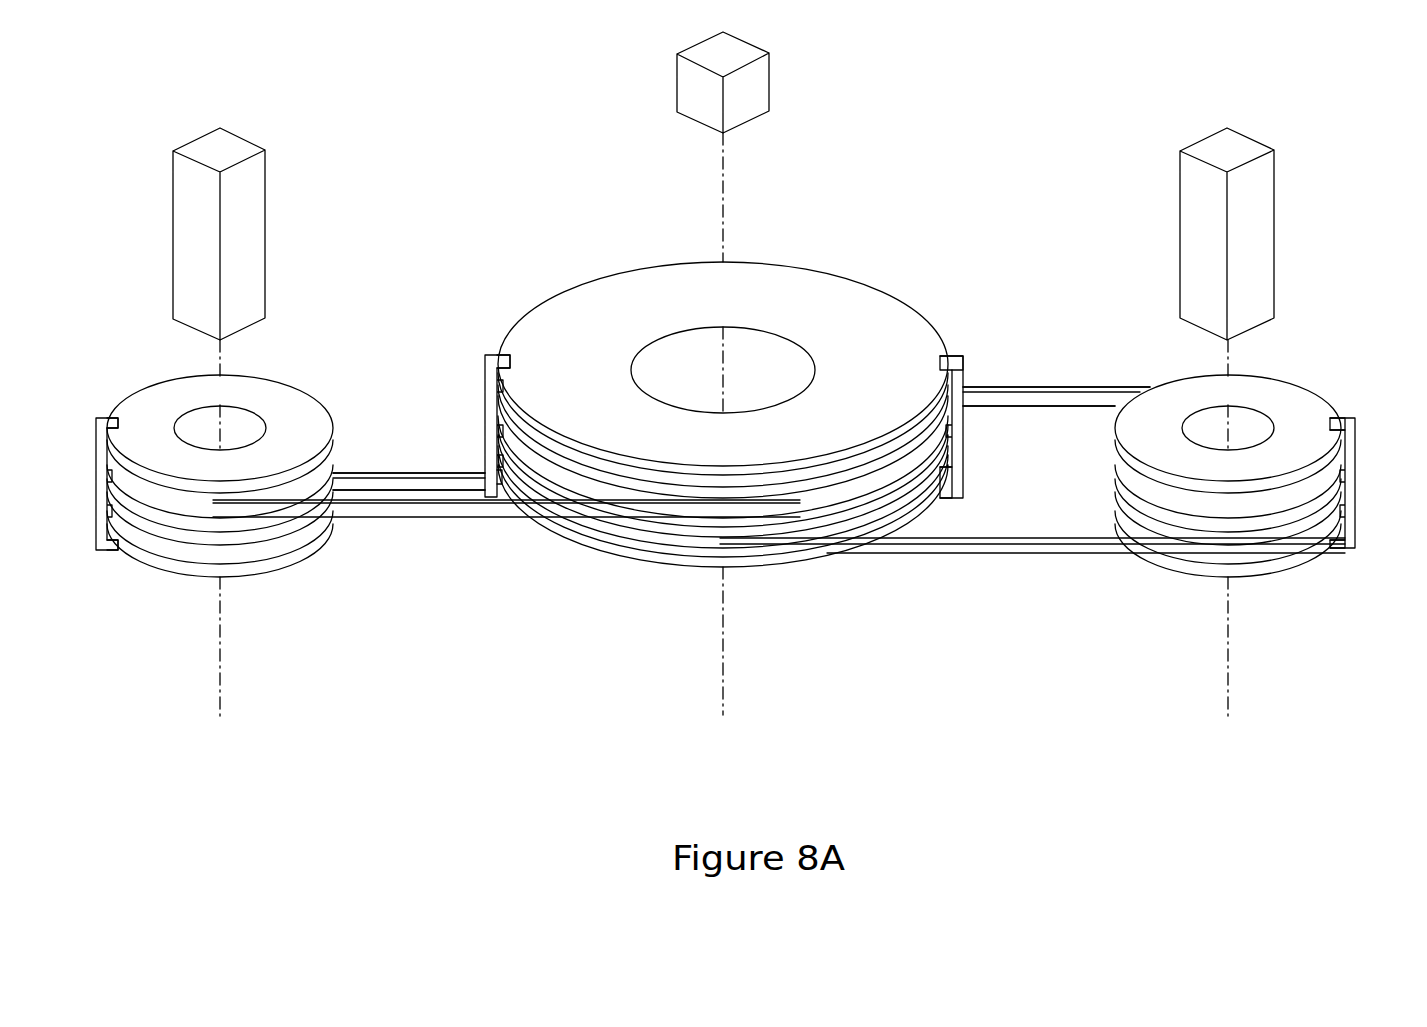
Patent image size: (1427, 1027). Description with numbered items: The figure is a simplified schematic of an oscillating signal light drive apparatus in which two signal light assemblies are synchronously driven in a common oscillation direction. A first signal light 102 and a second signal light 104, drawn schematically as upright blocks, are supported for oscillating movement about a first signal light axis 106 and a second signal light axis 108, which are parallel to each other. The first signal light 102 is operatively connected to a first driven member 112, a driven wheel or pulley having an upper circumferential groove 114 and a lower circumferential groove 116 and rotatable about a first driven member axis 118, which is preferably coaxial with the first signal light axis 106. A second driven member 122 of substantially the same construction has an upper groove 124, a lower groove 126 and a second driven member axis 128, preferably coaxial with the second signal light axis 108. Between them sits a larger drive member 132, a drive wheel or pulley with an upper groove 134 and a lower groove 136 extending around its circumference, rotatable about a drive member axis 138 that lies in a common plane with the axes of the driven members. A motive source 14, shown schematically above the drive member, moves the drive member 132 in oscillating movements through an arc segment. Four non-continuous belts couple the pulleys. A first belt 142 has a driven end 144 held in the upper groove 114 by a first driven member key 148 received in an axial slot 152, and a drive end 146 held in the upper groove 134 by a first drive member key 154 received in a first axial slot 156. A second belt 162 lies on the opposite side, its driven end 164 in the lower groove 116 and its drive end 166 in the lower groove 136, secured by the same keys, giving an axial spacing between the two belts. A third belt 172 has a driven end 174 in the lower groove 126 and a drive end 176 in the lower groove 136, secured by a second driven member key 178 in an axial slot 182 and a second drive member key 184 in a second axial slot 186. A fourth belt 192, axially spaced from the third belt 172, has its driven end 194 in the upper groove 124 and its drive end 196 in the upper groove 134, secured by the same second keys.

The motive source 14 is at (769, 60).
The first signal light 102 is at (253, 182).
The second signal light 104 is at (1262, 243).
The first signal light axis 106 is at (225, 366).
The second signal light axis 108 is at (1238, 359).
The first driven member 112 is at (277, 392).
The upper circumferential groove 114 is at (336, 462).
The lower circumferential groove 116 is at (290, 525).
The first driven member axis 118 is at (223, 677).
The second driven member 122 is at (1170, 388).
The upper groove 124 is at (1117, 466).
The lower groove 126 is at (1137, 509).
The second driven member axis 128 is at (1235, 603).
The drive member 132 is at (818, 290).
The upper groove 134 is at (563, 487).
The lower groove 136 is at (878, 510).
The drive member axis 138 is at (724, 225).
The first belt 142 is at (416, 505).
The first belt driven end 144 is at (113, 523).
The first belt drive end 146 is at (948, 422).
The first driven member key 148 is at (105, 421).
The axial slot 152 is at (118, 417).
The first drive member key 154 is at (960, 478).
The first axial slot 156 is at (945, 355).
The second belt 162 is at (416, 487).
The second belt driven end 164 is at (343, 462).
The second belt drive end 166 is at (485, 462).
The third belt 172 is at (997, 548).
The third belt driven end 174 is at (1340, 508).
The third belt drive end 176 is at (515, 483).
The second driven member key 178 is at (1350, 460).
The axial slot 182 is at (1340, 417).
The second drive member key 184 is at (490, 354).
The second axial slot 186 is at (500, 354).
The fourth belt 192 is at (1030, 397).
The fourth belt driven end 194 is at (1135, 378).
The fourth belt drive end 196 is at (995, 378).